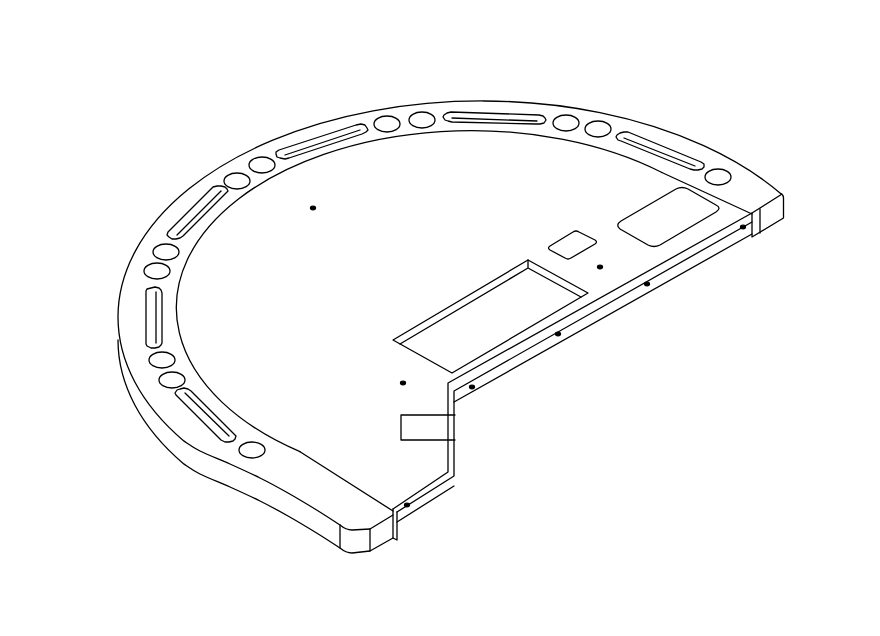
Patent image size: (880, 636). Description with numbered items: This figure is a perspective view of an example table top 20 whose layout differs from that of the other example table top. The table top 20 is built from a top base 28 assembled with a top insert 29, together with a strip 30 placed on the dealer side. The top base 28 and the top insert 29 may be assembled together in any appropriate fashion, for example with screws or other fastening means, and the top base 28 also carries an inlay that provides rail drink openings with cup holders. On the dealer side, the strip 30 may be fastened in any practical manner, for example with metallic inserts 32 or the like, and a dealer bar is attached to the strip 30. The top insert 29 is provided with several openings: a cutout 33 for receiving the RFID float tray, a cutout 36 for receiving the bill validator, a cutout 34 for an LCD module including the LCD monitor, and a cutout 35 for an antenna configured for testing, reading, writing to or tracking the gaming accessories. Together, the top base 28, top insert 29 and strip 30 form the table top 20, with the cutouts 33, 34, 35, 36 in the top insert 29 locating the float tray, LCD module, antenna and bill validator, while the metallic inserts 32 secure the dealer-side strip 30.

The table top 20 is at (188, 55).
The top base 28 is at (150, 375).
The top insert 29 is at (243, 235).
The strip 30 is at (705, 255).
The metallic inserts 32 is at (656, 282).
The cutout 33 is at (475, 337).
The cutout 34 is at (580, 230).
The cutout 35 is at (688, 218).
The cutout 36 is at (433, 433).